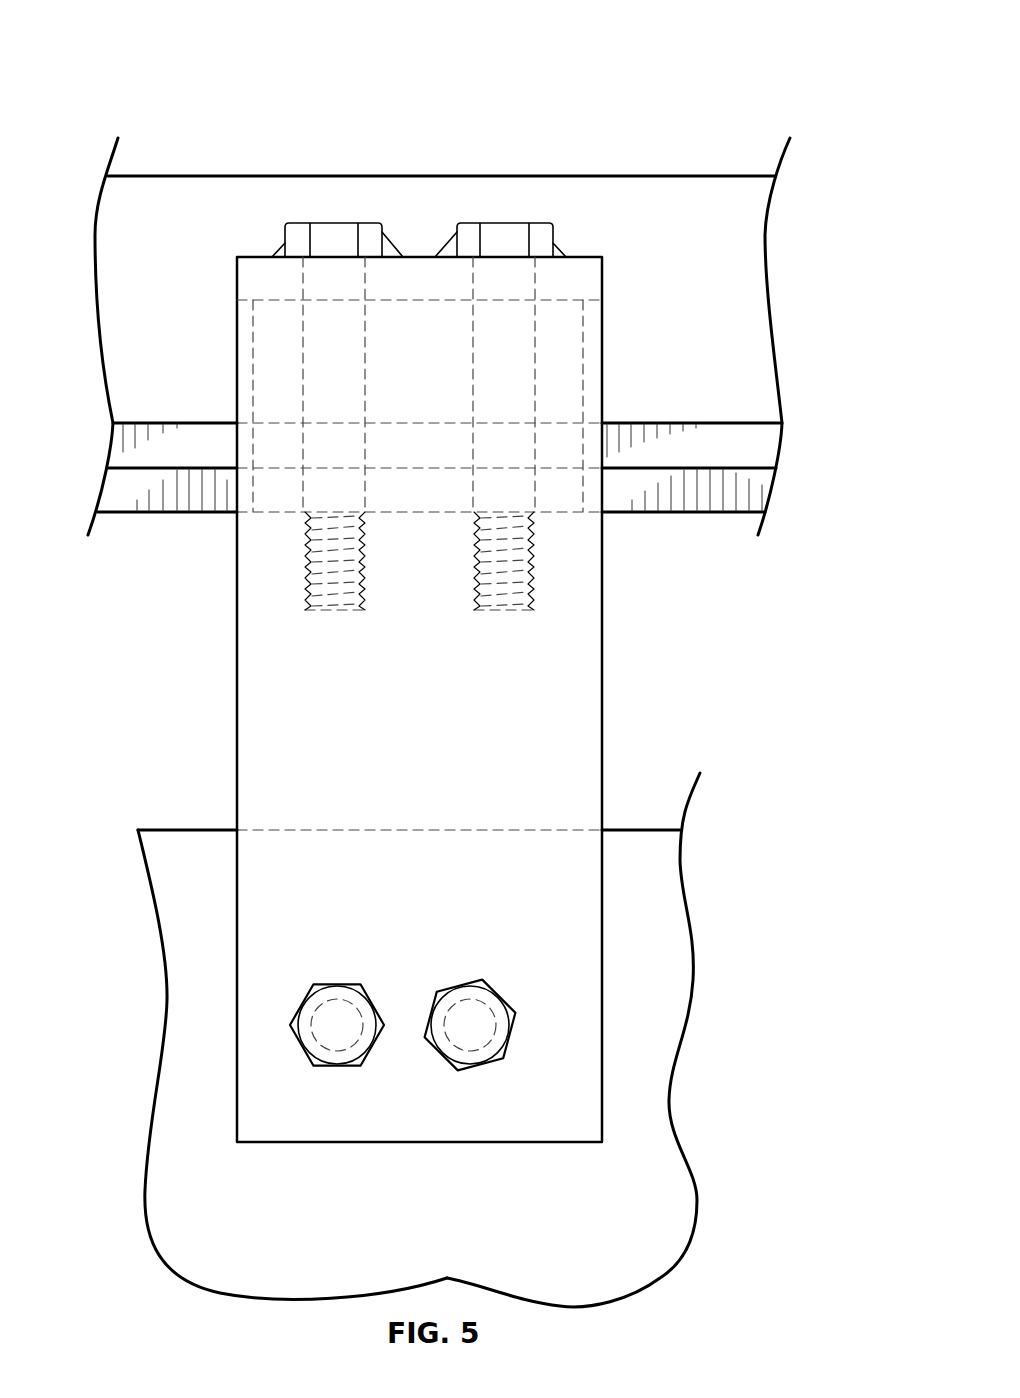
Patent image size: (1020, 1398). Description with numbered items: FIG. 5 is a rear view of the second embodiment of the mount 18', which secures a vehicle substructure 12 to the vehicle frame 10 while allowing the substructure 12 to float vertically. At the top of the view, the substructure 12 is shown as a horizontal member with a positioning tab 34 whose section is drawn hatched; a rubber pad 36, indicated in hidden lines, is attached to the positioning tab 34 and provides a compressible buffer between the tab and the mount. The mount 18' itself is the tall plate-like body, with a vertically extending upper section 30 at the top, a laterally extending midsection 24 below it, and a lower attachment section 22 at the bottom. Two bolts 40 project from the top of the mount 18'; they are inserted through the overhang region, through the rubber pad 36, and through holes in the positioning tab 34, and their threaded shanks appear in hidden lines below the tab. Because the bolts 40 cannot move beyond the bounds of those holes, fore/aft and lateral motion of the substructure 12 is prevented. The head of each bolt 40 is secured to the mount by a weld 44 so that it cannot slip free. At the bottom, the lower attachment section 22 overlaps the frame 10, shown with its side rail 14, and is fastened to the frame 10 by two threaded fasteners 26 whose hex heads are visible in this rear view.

The mount 18' is at (220, 39).
The substructure 12 is at (184, 176).
The positioning tab 34 is at (141, 420).
The vertically extending upper section 30 is at (602, 360).
The rubber pad 36 is at (596, 312).
The laterally extending midsection 24 is at (602, 678).
The lower attachment section 22 is at (585, 958).
The bolt 40 is at (328, 222).
The weld 44 is at (282, 243).
The threaded fastener 26 is at (327, 985).
The frame 10 is at (190, 830).
The side rail 14 is at (653, 883).